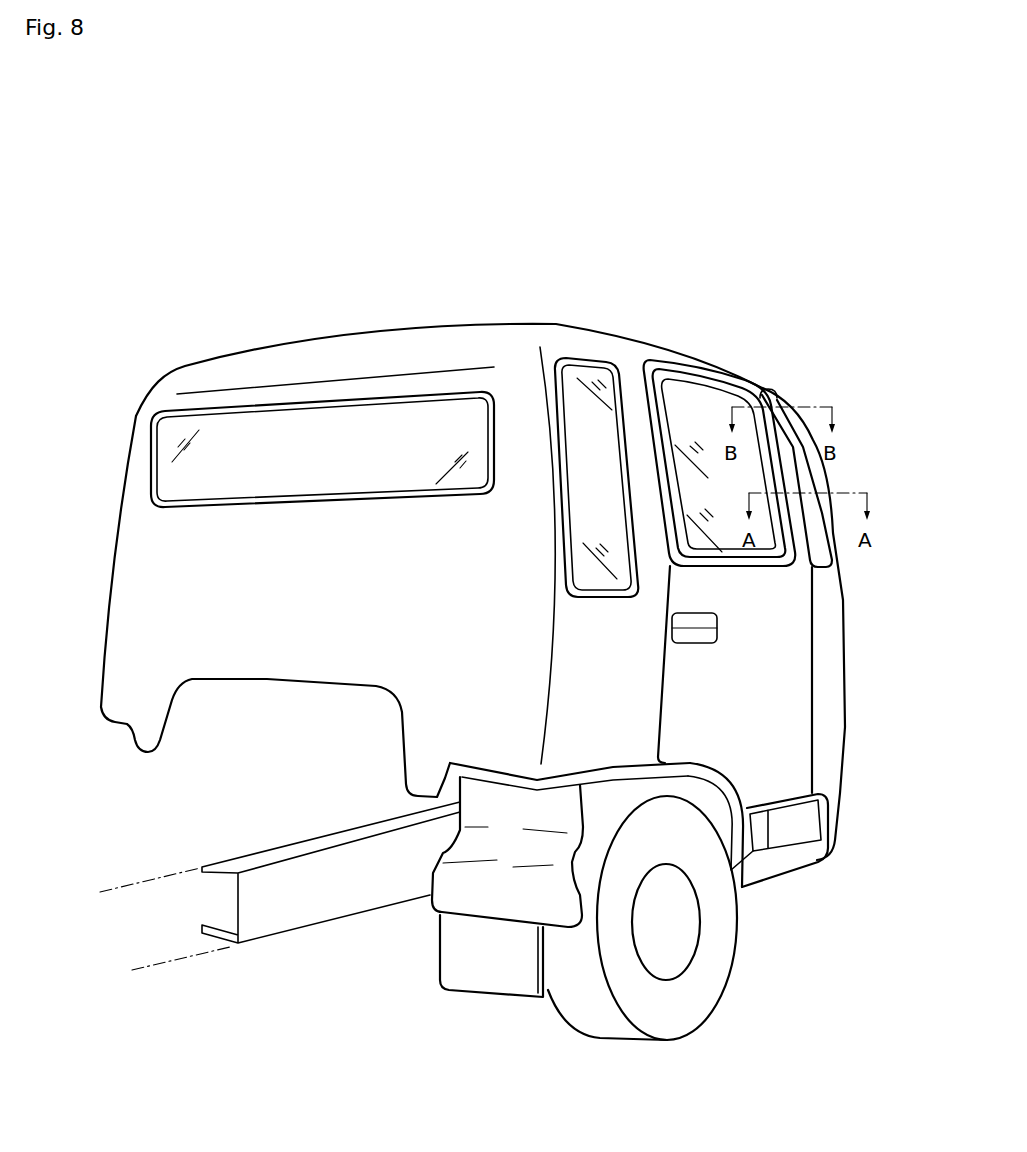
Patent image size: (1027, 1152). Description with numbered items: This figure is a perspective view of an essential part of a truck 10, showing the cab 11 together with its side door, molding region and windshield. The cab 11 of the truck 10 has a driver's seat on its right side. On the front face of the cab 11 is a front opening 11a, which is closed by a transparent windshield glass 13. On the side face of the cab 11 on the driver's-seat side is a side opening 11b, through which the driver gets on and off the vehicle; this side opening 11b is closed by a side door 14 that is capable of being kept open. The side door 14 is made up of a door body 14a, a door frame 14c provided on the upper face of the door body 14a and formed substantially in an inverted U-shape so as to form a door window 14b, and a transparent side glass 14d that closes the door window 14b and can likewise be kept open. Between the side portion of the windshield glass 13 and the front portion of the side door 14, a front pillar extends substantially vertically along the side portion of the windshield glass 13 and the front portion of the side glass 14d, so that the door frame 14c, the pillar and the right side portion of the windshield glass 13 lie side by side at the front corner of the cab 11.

The truck 10 is at (199, 187).
The cab 11 is at (332, 333).
The front opening 11a is at (803, 478).
The side opening 11b is at (810, 657).
The windshield glass 13 is at (823, 485).
The side door 14 is at (818, 627).
The door body 14a is at (739, 748).
The door window 14b is at (672, 433).
The door frame 14c is at (640, 387).
The side glass 14d is at (702, 422).